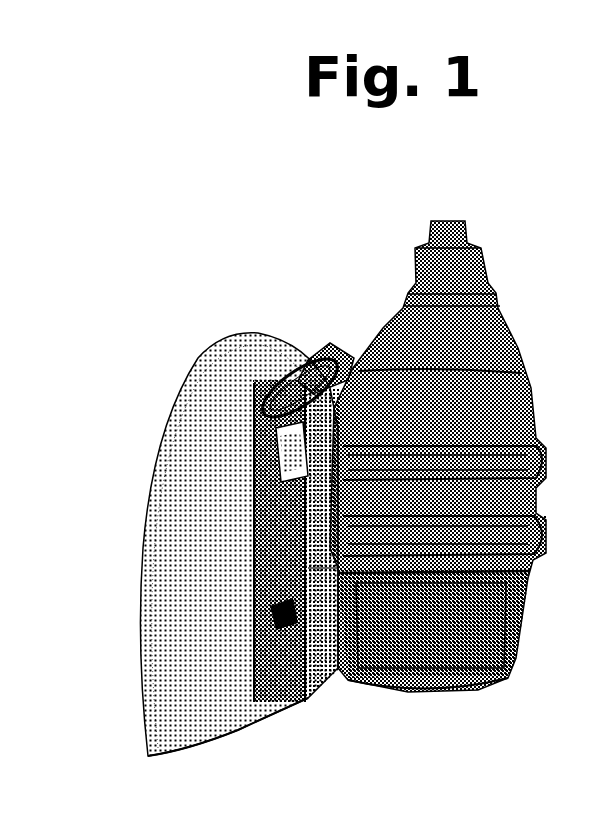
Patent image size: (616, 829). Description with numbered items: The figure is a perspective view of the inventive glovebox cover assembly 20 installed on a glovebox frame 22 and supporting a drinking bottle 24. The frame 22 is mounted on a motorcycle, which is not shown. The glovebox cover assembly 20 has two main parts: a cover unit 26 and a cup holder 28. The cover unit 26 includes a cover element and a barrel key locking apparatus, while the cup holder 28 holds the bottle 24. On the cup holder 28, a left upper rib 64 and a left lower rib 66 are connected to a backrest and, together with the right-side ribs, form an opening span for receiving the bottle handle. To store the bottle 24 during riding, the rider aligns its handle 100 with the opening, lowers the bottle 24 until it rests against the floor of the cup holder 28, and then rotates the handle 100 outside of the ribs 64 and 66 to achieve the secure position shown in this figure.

The glovebox cover assembly 20 is at (312, 314).
The glovebox frame 22 is at (182, 622).
The drinking bottle 24 is at (484, 338).
The cover unit 26 is at (262, 615).
The cup holder 28 is at (548, 523).
The left upper rib 64 is at (508, 438).
The left lower rib 66 is at (516, 560).
The handle 100 is at (293, 640).